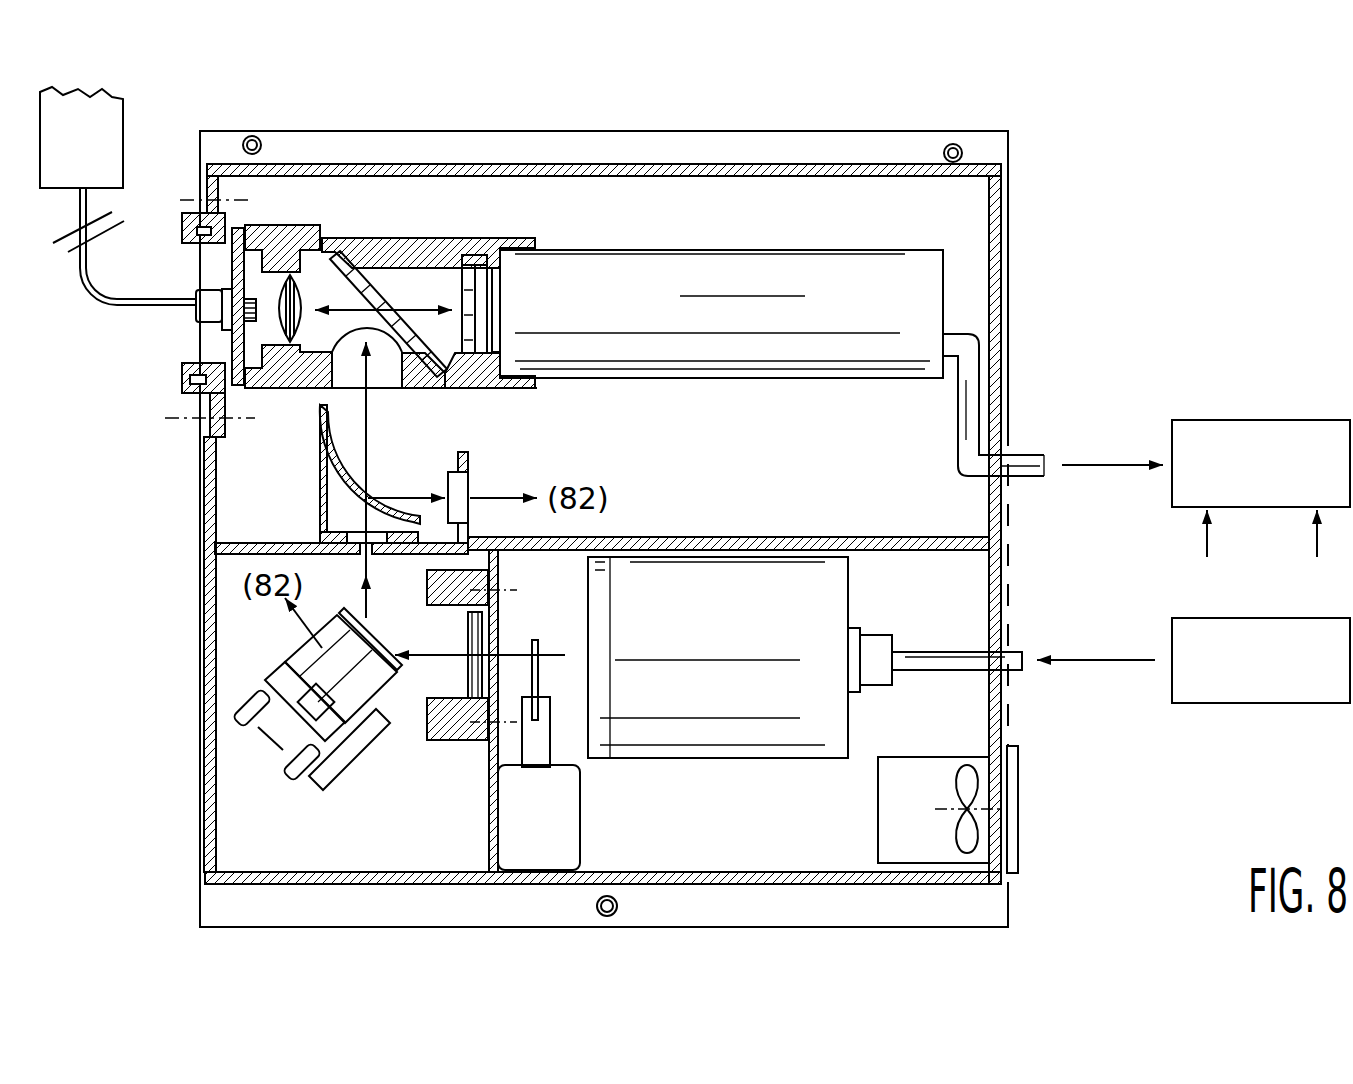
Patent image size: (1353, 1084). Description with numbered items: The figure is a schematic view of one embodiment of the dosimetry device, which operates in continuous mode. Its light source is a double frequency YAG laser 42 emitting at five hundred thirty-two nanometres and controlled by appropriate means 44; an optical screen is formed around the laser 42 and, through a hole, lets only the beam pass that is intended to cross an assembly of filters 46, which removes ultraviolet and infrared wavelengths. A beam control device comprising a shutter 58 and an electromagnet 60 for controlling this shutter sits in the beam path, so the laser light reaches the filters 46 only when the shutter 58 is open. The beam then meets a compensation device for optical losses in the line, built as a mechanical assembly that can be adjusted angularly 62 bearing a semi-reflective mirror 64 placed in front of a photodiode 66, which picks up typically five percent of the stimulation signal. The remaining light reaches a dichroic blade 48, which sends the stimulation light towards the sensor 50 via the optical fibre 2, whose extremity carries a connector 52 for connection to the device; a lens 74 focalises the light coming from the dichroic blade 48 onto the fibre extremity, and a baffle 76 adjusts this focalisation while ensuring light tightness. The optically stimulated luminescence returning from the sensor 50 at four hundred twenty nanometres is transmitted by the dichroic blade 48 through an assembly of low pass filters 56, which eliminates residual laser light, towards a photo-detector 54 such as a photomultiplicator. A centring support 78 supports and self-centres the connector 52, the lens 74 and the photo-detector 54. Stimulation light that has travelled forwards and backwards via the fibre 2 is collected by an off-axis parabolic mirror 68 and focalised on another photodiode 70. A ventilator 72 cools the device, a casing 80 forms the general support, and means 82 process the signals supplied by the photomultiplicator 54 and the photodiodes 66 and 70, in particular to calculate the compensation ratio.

The optical fibre 2 is at (90, 290).
The sensor 50 is at (100, 148).
The connector 52 is at (205, 315).
The lens 74 is at (280, 275).
The baffle 76 is at (252, 397).
The dichroic blade 48 is at (347, 275).
The centring support 78 is at (414, 250).
The assembly of low pass filters 56 is at (468, 285).
The photo-detector 54 is at (614, 277).
The casing 80 is at (1001, 308).
The means for processing the signals 82 is at (1283, 437).
The off-axis parabolic mirror 68 is at (347, 477).
The photodiode 70 is at (467, 480).
The double frequency YAG laser 42 is at (765, 578).
The shutter 58 is at (535, 640).
The semi-reflective mirror 64 is at (377, 640).
The mechanical assembly that can be adjusted angularly 62 is at (277, 678).
The photodiode 66 is at (372, 668).
The assembly of filters 46 is at (450, 673).
The electromagnet 60 is at (560, 795).
The ventilator 72 is at (978, 797).
The control means 44 is at (1225, 690).